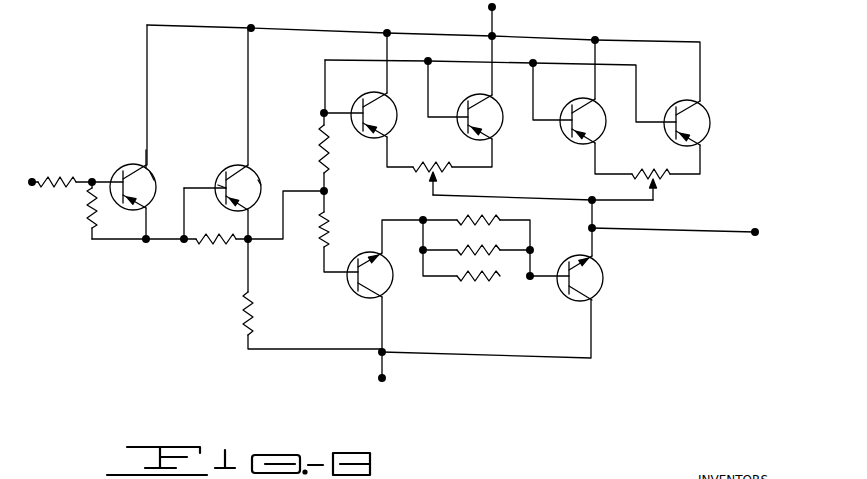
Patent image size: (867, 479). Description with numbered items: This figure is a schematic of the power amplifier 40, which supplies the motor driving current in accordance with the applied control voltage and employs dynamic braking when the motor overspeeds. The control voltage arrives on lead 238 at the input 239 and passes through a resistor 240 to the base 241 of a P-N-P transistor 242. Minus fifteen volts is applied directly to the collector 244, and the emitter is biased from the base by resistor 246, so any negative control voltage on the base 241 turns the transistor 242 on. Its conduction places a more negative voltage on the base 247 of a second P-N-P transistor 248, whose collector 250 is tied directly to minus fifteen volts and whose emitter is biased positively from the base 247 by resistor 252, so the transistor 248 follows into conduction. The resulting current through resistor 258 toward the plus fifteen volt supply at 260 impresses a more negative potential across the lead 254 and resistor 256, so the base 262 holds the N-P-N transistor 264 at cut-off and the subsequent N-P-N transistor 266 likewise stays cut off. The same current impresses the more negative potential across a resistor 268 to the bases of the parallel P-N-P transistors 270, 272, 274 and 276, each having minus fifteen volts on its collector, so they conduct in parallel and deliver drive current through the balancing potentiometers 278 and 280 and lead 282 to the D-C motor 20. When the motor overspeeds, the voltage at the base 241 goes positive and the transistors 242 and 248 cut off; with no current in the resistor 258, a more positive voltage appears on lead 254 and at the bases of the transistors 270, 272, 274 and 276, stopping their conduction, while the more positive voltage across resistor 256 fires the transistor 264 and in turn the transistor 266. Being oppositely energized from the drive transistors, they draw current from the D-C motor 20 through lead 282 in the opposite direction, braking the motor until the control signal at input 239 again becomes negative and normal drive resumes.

The D-C motor 20 is at (757, 257).
The power amplifier 40 is at (409, 202).
The lead 238 is at (48, 162).
The input 239 is at (32, 186).
The resistor 240 is at (72, 192).
The base 241 is at (112, 181).
The P-N-P transistor 242 is at (156, 176).
The collector 244 is at (151, 166).
The resistor 246 is at (100, 210).
The base 247 is at (219, 185).
The second P-N-P transistor 248 is at (261, 186).
The collector 250 is at (254, 172).
The resistor 252 is at (218, 244).
The lead 254 is at (273, 243).
The resistor 256 is at (331, 232).
The resistor 258 is at (255, 311).
The plus fifteen volt supply 260 is at (385, 378).
The base 262 is at (350, 273).
The N-P-N transistor 264 is at (392, 290).
The N-P-N transistor 266 is at (565, 300).
The resistor 268 is at (330, 153).
The P-N-P transistor 270 is at (392, 130).
The P-N-P transistor 272 is at (499, 133).
The P-N-P transistor 274 is at (598, 138).
The P-N-P transistor 276 is at (705, 140).
The balancing potentiometer 278 is at (436, 163).
The balancing potentiometer 280 is at (650, 168).
The lead 282 is at (644, 229).